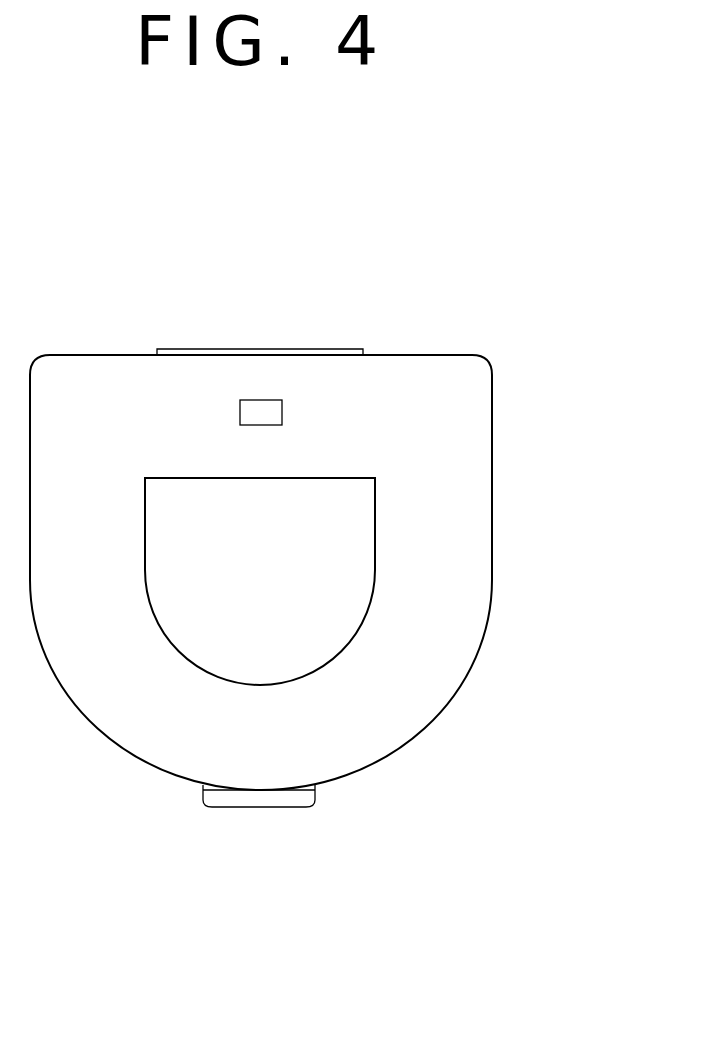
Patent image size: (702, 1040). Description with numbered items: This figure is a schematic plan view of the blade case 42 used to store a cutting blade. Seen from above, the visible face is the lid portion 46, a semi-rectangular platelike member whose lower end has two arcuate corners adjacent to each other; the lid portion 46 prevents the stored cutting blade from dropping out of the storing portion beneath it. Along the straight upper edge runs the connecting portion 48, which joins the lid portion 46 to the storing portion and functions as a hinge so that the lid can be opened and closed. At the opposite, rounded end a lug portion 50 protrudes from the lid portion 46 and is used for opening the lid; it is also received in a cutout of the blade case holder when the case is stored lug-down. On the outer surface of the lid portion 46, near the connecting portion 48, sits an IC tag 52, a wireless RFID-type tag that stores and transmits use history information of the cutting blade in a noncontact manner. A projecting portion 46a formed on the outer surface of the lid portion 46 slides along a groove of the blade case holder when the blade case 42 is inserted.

The blade case 42 is at (96, 316).
The lid portion 46 is at (492, 522).
The projecting portion 46a is at (343, 603).
The connecting portion 48 is at (335, 350).
The lug portion 50 is at (258, 802).
The IC tag 52 is at (258, 413).